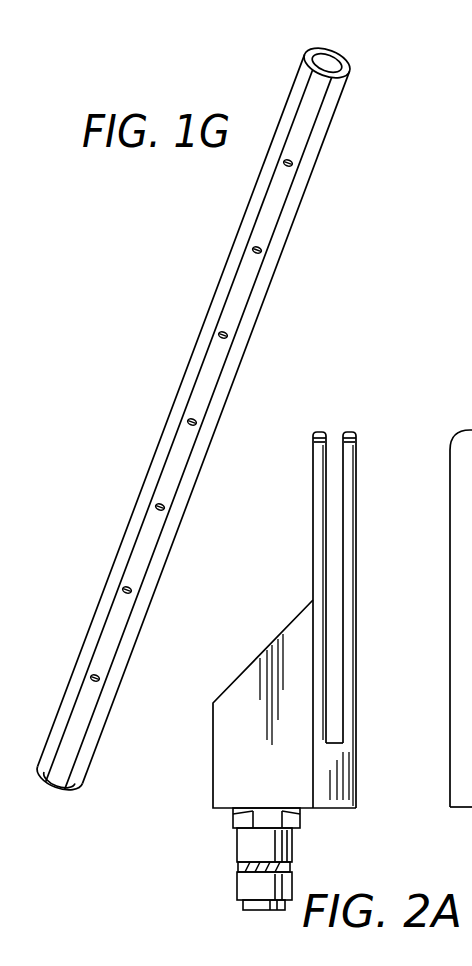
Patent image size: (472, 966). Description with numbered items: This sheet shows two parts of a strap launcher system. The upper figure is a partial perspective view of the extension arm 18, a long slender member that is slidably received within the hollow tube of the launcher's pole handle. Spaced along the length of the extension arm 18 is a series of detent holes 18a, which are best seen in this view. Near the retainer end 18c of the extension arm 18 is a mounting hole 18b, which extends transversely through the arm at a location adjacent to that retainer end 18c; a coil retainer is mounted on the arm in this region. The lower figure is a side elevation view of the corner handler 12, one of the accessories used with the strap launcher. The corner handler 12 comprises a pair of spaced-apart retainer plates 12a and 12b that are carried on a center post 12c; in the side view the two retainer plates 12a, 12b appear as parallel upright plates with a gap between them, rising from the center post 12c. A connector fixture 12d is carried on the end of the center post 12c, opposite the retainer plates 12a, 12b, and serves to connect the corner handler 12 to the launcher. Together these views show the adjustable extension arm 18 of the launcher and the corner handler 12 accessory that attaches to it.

In FIG. 1G, the extension arm 18 is at (242, 325).
In FIG. 1G, the detent holes 18a is at (253, 250).
In FIG. 1G, the mounting hole 18b is at (289, 168).
In FIG. 1G, the retainer end 18c is at (315, 95).
In FIG. 2A, the corner handler 12 is at (294, 603).
In FIG. 2A, the retainer plate 12a is at (313, 533).
In FIG. 2A, the retainer plate 12b is at (357, 558).
In FIG. 2A, the center post 12c is at (235, 748).
In FIG. 2A, the connector fixture 12d is at (260, 853).